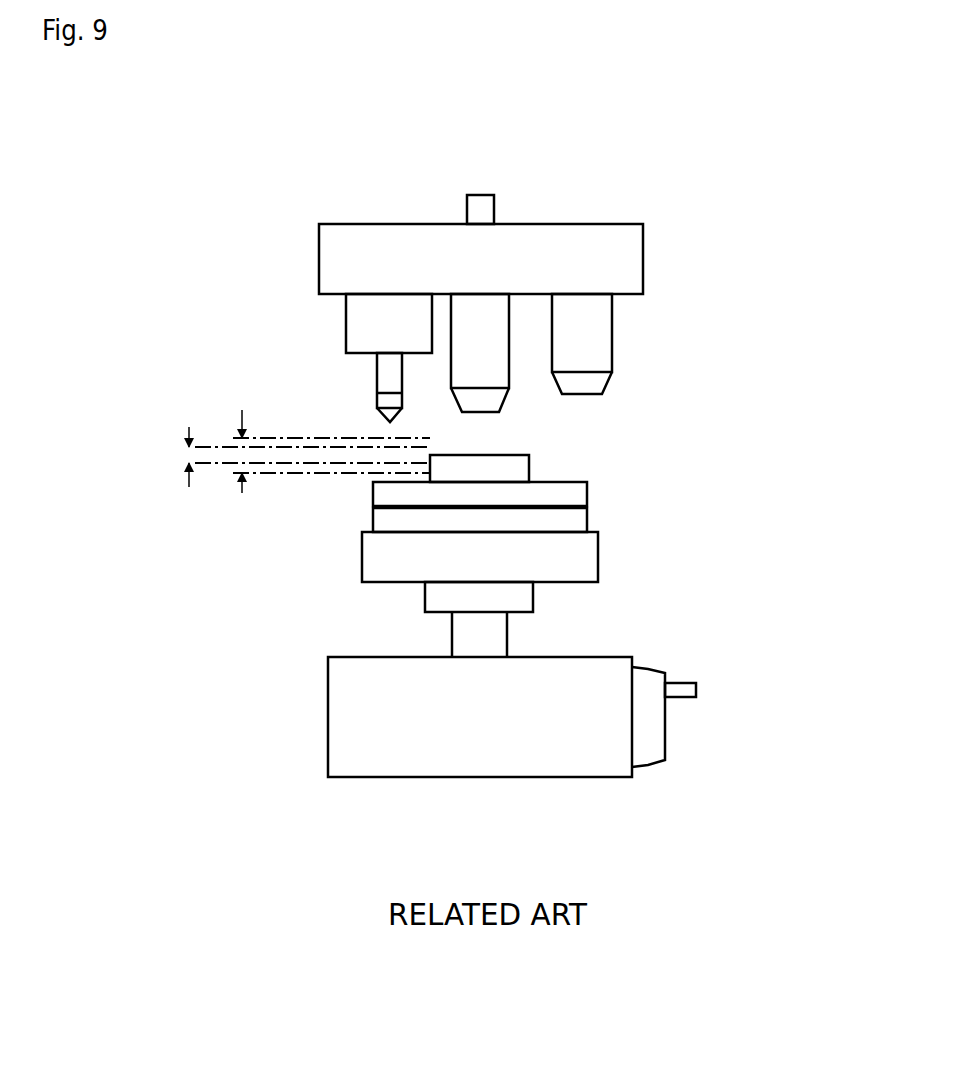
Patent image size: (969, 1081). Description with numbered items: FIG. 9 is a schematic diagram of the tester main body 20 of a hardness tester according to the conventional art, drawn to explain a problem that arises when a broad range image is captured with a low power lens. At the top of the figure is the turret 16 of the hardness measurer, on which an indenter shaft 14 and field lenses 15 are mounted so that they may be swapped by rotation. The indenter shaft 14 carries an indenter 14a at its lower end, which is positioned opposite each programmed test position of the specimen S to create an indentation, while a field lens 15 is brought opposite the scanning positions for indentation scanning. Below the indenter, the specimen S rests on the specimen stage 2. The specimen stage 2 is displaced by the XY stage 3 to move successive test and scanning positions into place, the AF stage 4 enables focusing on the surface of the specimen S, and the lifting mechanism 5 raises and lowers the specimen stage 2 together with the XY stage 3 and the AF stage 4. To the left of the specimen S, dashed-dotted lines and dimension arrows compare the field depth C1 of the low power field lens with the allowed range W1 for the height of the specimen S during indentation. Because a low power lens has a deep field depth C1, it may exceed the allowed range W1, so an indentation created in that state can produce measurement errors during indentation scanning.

The tester main body 20 is at (605, 157).
The turret 16 is at (633, 254).
The indenter shaft 14 is at (355, 332).
The indenter 14a is at (378, 416).
The field lens 15 is at (497, 322).
The specimen S is at (527, 468).
The specimen stage 2 is at (585, 493).
The AF stage 4 is at (585, 522).
The XY stage 3 is at (597, 557).
The lifting mechanism 5 is at (530, 593).
The allowed range for height of the specimen W1 is at (191, 471).
The field depth C1 is at (243, 466).